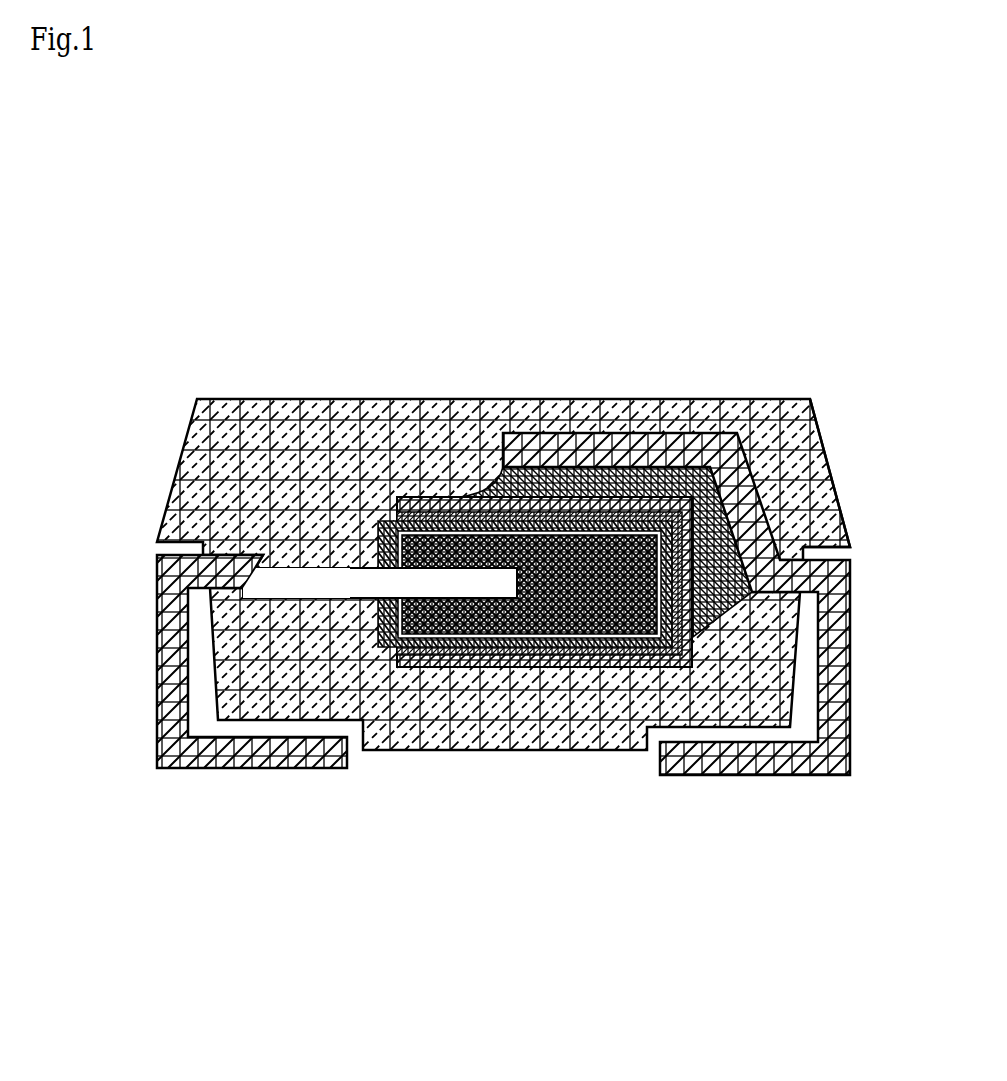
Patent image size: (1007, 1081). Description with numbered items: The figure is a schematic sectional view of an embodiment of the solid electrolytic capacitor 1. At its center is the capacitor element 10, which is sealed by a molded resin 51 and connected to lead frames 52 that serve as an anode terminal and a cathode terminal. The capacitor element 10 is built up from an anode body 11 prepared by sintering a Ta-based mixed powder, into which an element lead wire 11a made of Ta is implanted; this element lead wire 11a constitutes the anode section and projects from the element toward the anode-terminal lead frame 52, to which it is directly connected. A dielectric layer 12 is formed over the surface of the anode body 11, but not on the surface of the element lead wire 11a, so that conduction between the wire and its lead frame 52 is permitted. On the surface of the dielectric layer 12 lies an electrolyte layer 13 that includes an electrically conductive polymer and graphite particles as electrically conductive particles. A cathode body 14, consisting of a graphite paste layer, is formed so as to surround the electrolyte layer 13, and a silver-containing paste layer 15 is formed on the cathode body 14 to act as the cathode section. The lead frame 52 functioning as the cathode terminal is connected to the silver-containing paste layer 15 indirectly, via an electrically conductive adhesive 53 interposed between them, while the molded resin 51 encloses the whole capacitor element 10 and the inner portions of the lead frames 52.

The solid electrolytic capacitor 1 is at (457, 558).
The capacitor element 10 is at (501, 569).
The anode body 11 is at (289, 383).
The element lead wire 11a is at (297, 580).
The dielectric layer 12 is at (443, 653).
The electrolyte layer 13 is at (473, 655).
The cathode body 14 is at (557, 660).
The silver-containing paste layer 15 is at (600, 665).
The molded resin 51 is at (240, 417).
The lead frame 52 is at (178, 630).
The electrically conductive adhesive 53 is at (779, 478).